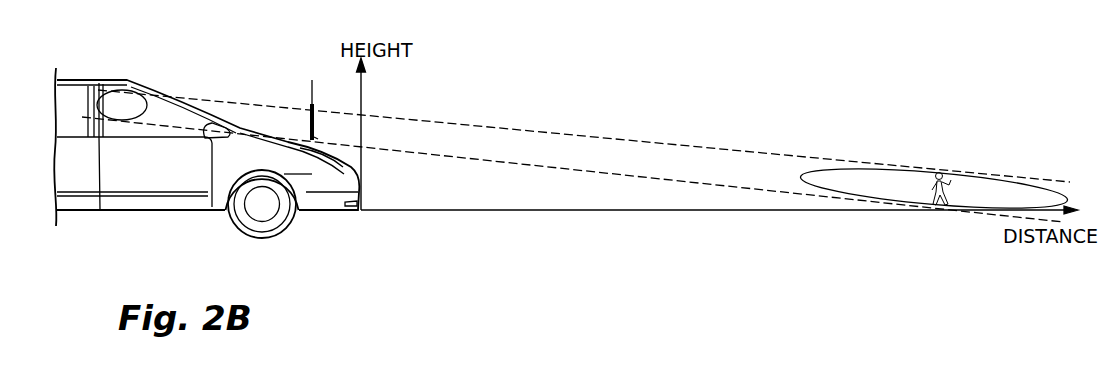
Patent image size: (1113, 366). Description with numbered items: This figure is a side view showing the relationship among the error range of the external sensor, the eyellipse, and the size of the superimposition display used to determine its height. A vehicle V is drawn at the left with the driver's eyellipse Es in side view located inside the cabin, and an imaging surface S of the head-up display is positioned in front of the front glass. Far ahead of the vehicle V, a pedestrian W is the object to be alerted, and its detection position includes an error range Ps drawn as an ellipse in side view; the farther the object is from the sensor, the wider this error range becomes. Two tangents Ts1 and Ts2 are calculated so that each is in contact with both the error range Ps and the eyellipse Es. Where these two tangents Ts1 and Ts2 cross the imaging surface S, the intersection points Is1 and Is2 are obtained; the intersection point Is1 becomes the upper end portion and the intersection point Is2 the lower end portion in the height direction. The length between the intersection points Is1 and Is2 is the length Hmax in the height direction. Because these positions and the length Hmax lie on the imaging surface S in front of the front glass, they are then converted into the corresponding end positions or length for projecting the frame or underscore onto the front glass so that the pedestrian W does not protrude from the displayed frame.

The vehicle V is at (160, 212).
The eyellipse in side view Es is at (124, 102).
The imaging surface S is at (314, 82).
The intersection point Is1 is at (311, 108).
The intersection point Is2 is at (322, 154).
The length in the height direction Hmax is at (316, 138).
The tangent Ts1 is at (669, 143).
The tangent Ts2 is at (750, 189).
The error range in side view Ps is at (821, 169).
The pedestrian W is at (937, 172).